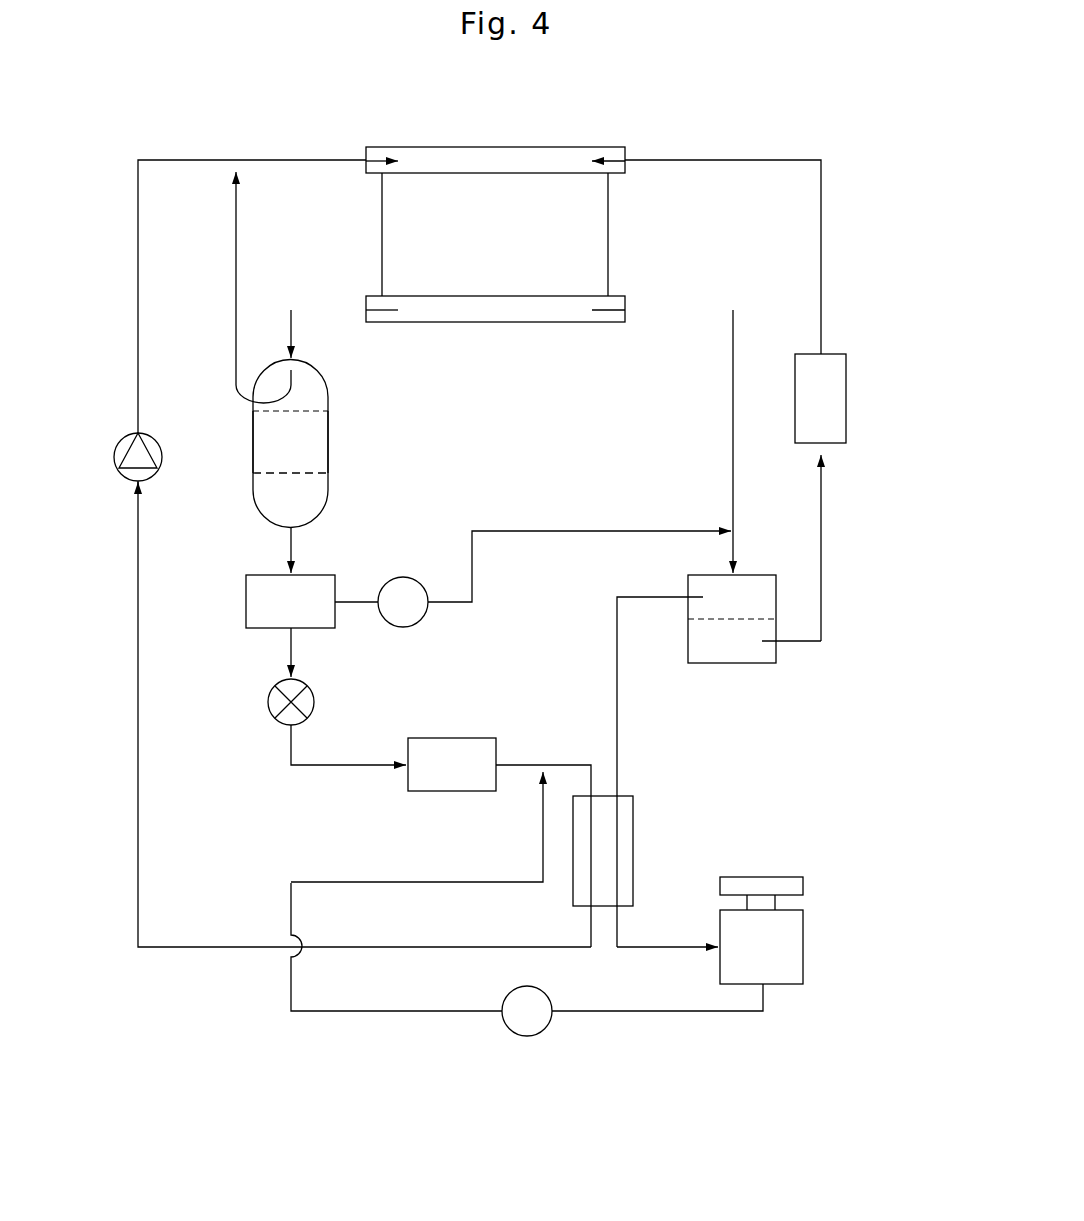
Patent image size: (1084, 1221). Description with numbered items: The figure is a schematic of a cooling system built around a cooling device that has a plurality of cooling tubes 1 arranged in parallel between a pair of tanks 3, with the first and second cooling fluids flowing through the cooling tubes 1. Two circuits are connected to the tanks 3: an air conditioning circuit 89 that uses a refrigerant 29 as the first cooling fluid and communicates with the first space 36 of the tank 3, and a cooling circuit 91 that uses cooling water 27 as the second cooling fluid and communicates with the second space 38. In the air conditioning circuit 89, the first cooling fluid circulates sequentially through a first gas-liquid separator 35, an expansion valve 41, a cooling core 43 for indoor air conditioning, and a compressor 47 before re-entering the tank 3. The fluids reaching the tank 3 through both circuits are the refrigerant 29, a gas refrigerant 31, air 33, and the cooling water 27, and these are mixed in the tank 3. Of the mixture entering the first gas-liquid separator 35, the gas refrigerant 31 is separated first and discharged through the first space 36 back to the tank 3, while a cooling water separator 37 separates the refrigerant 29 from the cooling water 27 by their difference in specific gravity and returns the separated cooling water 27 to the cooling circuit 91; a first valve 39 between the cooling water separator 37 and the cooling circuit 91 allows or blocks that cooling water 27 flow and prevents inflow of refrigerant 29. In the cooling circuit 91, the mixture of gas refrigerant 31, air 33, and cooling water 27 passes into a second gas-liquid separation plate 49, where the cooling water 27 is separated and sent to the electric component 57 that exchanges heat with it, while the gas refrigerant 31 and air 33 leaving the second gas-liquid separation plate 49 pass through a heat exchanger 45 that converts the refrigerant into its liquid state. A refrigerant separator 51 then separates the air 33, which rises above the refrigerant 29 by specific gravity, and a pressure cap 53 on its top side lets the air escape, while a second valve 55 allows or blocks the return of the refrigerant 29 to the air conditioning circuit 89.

The cooling tube 1 is at (608, 240).
The tank 3 is at (492, 146).
The cooling water 27 is at (316, 446).
The refrigerant 29 is at (318, 492).
The gas refrigerant 31 is at (316, 392).
The air 33 is at (762, 602).
The first gas-liquid separator 35 is at (322, 364).
The first space 36 is at (236, 250).
The cooling water separator 37 is at (244, 572).
The second space 38 is at (600, 530).
The first valve 39 is at (405, 574).
The expansion valve 41 is at (268, 701).
The cooling core 43 is at (460, 737).
The heat exchanger 45 is at (633, 832).
The compressor 47 is at (146, 434).
The second gas-liquid separation plate 49 is at (755, 573).
The refrigerant separator 51 is at (783, 986).
The pressure cap 53 is at (782, 876).
The second valve 55 is at (527, 1036).
The electric component 57 is at (846, 400).
The air conditioning circuit 89 is at (111, 168).
The cooling circuit 91 is at (845, 168).